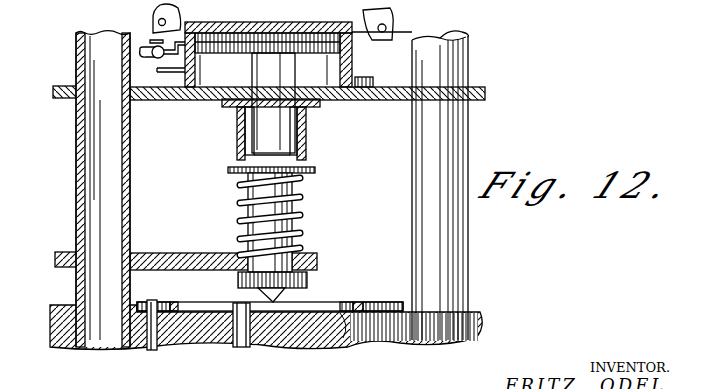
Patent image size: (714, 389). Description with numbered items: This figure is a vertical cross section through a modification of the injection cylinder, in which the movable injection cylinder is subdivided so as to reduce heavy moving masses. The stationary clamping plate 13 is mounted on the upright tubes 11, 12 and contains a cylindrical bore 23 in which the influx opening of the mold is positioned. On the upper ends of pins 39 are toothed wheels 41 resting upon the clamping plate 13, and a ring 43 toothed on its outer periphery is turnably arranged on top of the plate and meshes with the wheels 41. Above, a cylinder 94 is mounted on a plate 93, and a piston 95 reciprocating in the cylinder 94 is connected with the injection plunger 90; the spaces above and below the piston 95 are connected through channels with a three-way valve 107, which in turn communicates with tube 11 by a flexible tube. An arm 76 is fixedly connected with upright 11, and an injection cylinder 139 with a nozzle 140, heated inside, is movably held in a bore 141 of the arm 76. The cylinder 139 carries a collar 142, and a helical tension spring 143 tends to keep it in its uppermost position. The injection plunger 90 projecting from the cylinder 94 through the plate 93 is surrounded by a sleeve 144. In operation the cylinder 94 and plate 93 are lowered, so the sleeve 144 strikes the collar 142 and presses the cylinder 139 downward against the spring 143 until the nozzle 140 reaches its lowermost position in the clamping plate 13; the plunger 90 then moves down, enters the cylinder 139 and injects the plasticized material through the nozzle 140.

The tube 11 is at (130, 163).
The tube 12 is at (460, 77).
The clamping plate 13 is at (197, 337).
The cylindrical bore 23 is at (250, 330).
The pin 39 is at (148, 347).
The toothed wheel 41 is at (158, 299).
The ring 43 is at (270, 296).
The arm 76 is at (54, 256).
The injection plunger 90 is at (280, 68).
The plate 93 is at (337, 100).
The cylinder 94 is at (352, 62).
The piston 95 is at (273, 50).
The three-way valve 107 is at (152, 48).
The injection cylinder 139 is at (300, 227).
The nozzle 140 is at (307, 284).
The bore 141 is at (237, 256).
The collar 142 is at (315, 170).
The helical tension spring 143 is at (302, 200).
The sleeve 144 is at (306, 150).